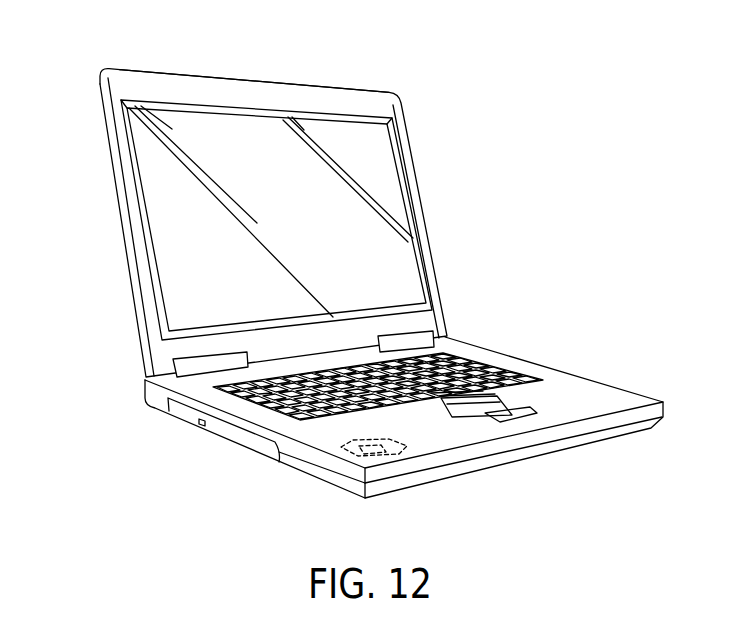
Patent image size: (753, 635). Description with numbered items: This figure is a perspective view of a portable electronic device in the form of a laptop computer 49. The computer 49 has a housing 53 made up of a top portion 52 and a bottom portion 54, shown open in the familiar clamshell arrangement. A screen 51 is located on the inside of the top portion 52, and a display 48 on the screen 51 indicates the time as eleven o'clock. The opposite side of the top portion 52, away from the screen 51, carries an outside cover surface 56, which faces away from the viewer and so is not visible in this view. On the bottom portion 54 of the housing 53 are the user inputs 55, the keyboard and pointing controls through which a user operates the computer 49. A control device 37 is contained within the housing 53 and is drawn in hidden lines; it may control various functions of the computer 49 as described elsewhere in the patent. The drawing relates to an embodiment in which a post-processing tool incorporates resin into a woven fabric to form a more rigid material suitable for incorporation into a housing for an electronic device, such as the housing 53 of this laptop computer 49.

The control device 37 is at (339, 458).
The display 48 is at (417, 297).
The laptop computer 49 is at (99, 66).
The screen 51 is at (383, 153).
The top portion 52 is at (358, 102).
The housing 53 is at (133, 318).
The bottom portion 54 is at (620, 400).
The user inputs 55 is at (532, 413).
The outside cover surface 56 is at (106, 168).